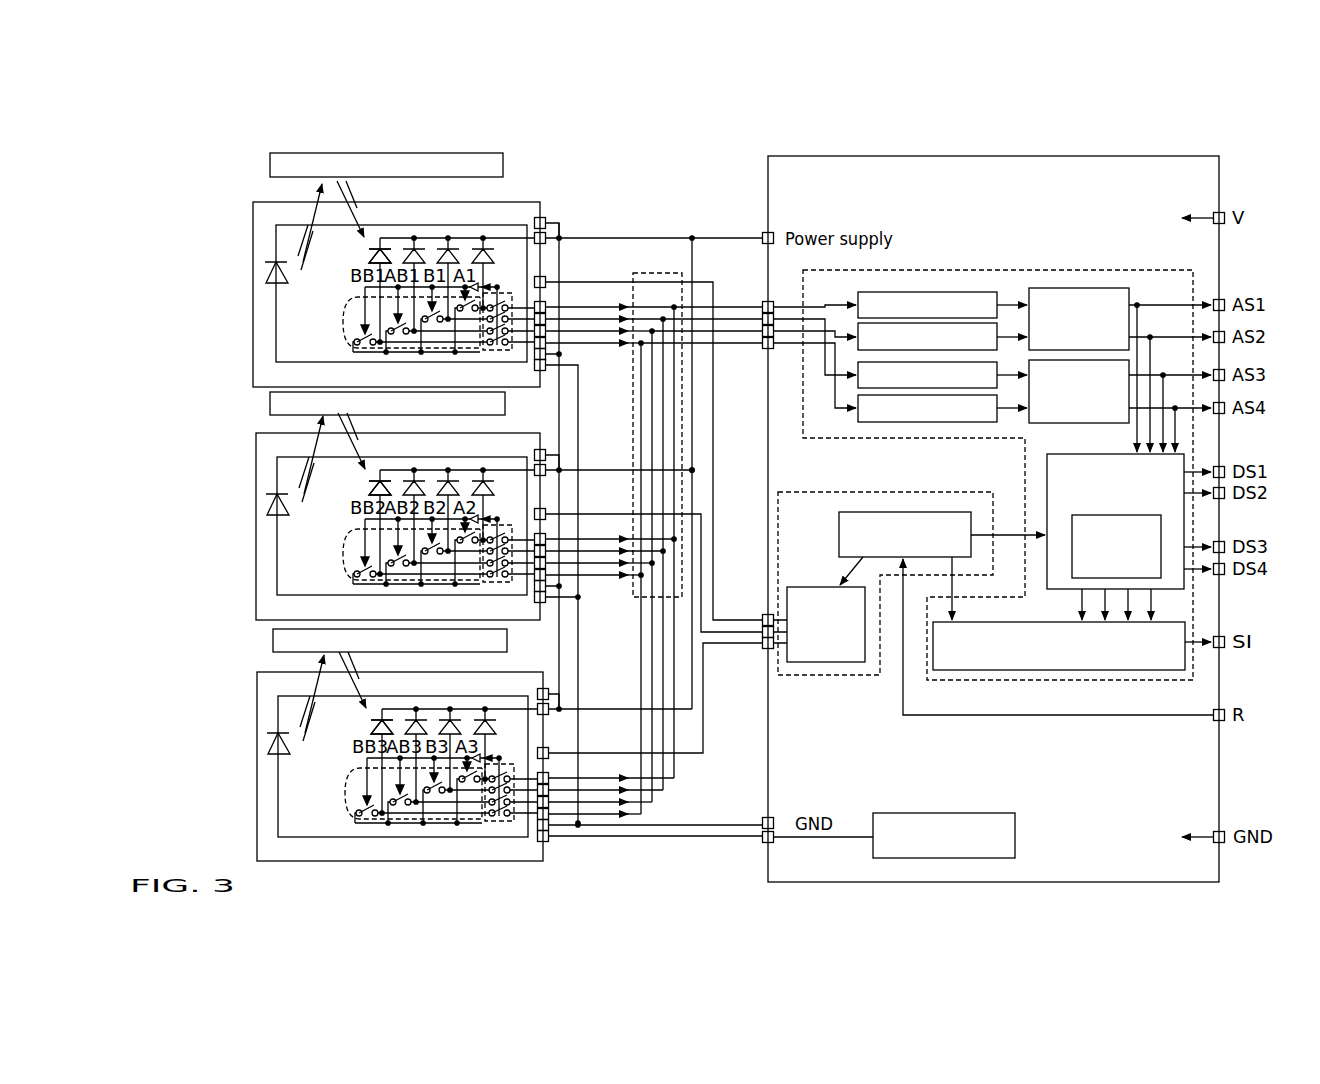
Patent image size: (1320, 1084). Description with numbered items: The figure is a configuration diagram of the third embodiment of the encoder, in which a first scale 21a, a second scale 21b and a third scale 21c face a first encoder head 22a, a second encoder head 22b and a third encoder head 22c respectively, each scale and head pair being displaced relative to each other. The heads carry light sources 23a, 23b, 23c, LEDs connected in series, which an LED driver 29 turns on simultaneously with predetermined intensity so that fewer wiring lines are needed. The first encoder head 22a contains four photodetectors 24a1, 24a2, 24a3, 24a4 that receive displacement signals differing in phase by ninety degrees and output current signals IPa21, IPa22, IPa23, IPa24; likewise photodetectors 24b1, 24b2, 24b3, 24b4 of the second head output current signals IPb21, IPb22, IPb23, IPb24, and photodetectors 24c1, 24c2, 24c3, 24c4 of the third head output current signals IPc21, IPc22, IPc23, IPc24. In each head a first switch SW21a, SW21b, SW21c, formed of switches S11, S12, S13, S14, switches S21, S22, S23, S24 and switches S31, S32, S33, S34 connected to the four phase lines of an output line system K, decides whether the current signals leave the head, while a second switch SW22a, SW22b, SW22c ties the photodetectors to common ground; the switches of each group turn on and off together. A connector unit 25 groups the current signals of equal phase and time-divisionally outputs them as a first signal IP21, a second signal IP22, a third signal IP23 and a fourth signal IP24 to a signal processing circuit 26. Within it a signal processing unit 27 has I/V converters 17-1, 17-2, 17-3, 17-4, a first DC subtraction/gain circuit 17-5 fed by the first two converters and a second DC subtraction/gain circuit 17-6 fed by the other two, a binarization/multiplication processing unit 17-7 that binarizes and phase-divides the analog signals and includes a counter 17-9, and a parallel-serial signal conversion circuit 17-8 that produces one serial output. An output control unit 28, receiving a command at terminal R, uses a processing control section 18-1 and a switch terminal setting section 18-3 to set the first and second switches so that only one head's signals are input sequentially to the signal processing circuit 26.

The first scale 21a is at (270, 165).
The second scale 21b is at (270, 403).
The third scale 21c is at (273, 640).
The first encoder head 22a is at (253, 209).
The second encoder head 22b is at (256, 441).
The third encoder head 22c is at (257, 681).
The light source 23a is at (265, 272).
The light source 23b is at (285, 464).
The light source 23c is at (285, 703).
The photodetector 24a1 is at (546, 221).
The photodetector 24a2 is at (488, 240).
The photodetector 24a3 is at (371, 249).
The photodetector 24a4 is at (370, 262).
The photodetector 24b1 is at (564, 440).
The photodetector 24b2 is at (458, 441).
The photodetector 24b3 is at (353, 476).
The photodetector 24b4 is at (345, 496).
The photodetector 24c1 is at (566, 679).
The photodetector 24c2 is at (461, 680).
The photodetector 24c3 is at (355, 715).
The photodetector 24c4 is at (347, 735).
The connector unit 25 is at (652, 273).
The signal processing circuit 26 is at (1219, 163).
The signal processing unit 27 is at (1159, 270).
The output control unit 28 is at (803, 492).
The LED driver 29 is at (951, 813).
The I/V converter 17-1 is at (935, 292).
The I/V converter 17-2 is at (1004, 323).
The I/V converter 17-3 is at (1003, 395).
The I/V converter 17-4 is at (935, 422).
The first DC subtraction/gain circuit 17-5 is at (1105, 288).
The second DC subtraction/gain circuit 17-6 is at (1060, 423).
The binarization/multiplication processing unit 17-7 is at (1176, 589).
The parallel-serial signal conversion circuit 17-8 is at (1065, 670).
The counter 17-9 is at (1162, 534).
The processing control section 18-1 is at (860, 512).
The switch (SW) terminal setting section 18-3 is at (805, 587).
The output line system K is at (742, 418).
The switch S11 is at (536, 281).
The switch S12 is at (546, 306).
The switch S13 is at (536, 366).
The switch S14 is at (497, 353).
The switch S21 is at (630, 561).
The switch S22 is at (615, 502).
The switch S23 is at (525, 577).
The switch S24 is at (525, 600).
The switch S31 is at (630, 709).
The switch S32 is at (598, 728).
The switch S33 is at (524, 817).
The switch S34 is at (616, 855).
The first switch SW21a is at (482, 352).
The second switch SW22a is at (343, 320).
The first switch SW21b is at (465, 568).
The second switch SW22b is at (343, 540).
The first switch SW21c is at (471, 808).
The second switch SW22c is at (344, 779).
The current signal IPa21 is at (610, 294).
The current signal IPa22 is at (605, 321).
The current signal IPa23 is at (584, 333).
The current signal IPa24 is at (573, 345).
The current signal IPb21 is at (610, 526).
The current signal IPb22 is at (605, 583).
The current signal IPb23 is at (599, 600).
The current signal IPb24 is at (594, 618).
The current signal IPc21 is at (612, 765).
The current signal IPc22 is at (620, 825).
The current signal IPc23 is at (601, 831).
The current signal IPc24 is at (595, 848).
The first signal IP21 is at (760, 307).
The second signal IP22 is at (761, 318).
The third signal IP23 is at (761, 332).
The fourth signal IP24 is at (762, 344).